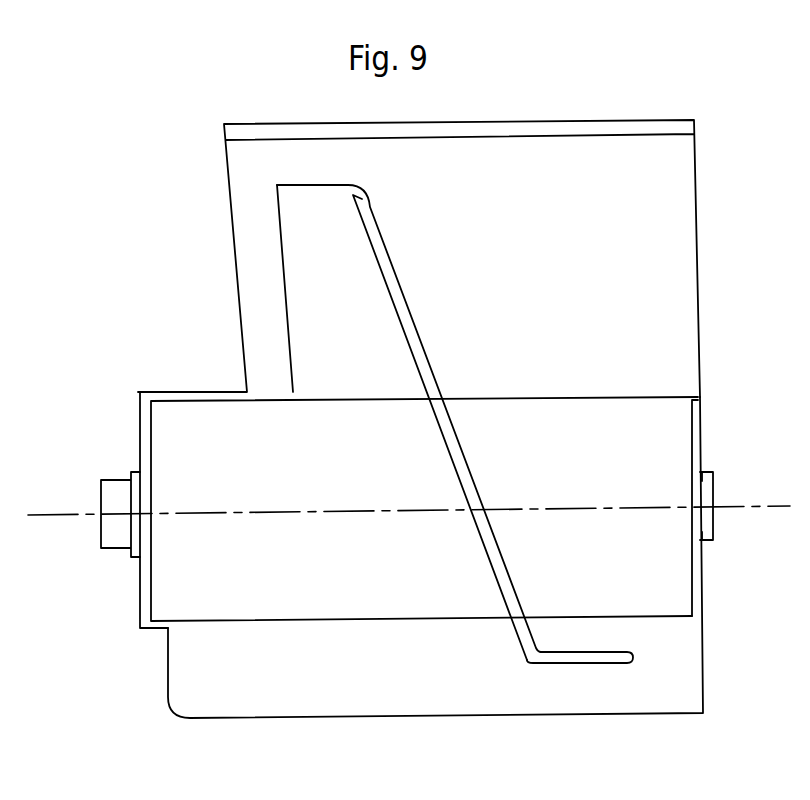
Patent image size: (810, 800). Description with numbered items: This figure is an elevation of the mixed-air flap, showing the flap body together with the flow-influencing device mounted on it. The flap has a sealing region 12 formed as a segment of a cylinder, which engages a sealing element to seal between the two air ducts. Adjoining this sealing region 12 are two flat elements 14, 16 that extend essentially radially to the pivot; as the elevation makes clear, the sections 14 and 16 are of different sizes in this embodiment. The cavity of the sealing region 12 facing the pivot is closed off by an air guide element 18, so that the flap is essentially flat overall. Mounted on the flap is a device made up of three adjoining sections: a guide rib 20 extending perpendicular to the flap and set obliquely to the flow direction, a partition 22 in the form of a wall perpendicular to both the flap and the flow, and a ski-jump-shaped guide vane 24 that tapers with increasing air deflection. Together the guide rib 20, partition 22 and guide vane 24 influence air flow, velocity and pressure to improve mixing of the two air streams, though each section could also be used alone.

The sealing region 12 is at (705, 572).
The flat element 14 is at (312, 700).
The flat element 16 is at (672, 163).
The air guide element 18 is at (562, 432).
The guide rib 20 is at (407, 311).
The partition 22 is at (587, 658).
The guide vane 24 is at (312, 253).